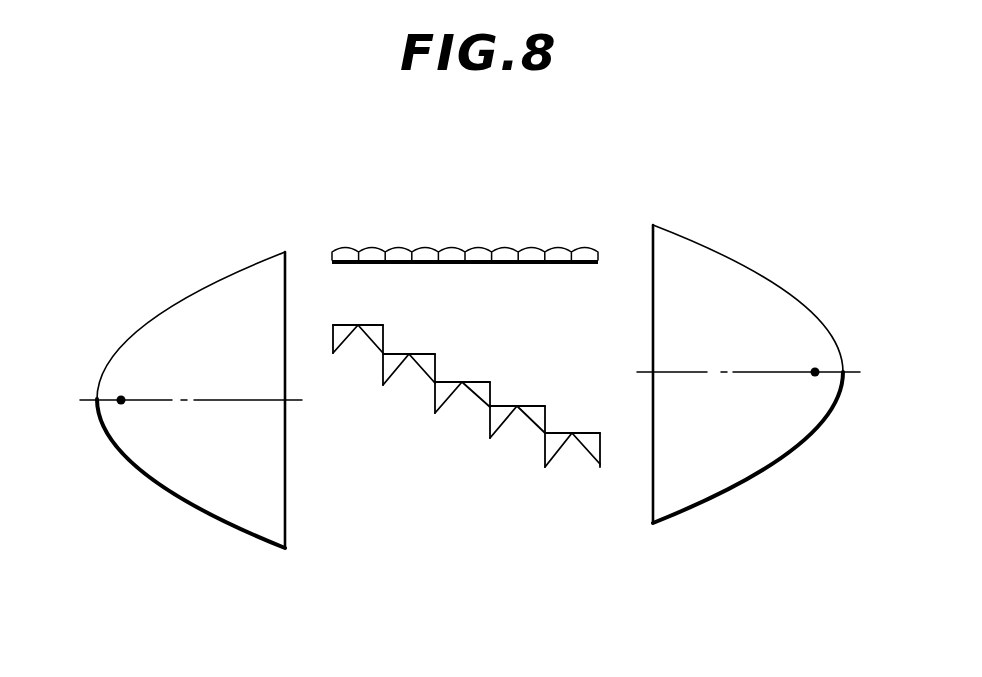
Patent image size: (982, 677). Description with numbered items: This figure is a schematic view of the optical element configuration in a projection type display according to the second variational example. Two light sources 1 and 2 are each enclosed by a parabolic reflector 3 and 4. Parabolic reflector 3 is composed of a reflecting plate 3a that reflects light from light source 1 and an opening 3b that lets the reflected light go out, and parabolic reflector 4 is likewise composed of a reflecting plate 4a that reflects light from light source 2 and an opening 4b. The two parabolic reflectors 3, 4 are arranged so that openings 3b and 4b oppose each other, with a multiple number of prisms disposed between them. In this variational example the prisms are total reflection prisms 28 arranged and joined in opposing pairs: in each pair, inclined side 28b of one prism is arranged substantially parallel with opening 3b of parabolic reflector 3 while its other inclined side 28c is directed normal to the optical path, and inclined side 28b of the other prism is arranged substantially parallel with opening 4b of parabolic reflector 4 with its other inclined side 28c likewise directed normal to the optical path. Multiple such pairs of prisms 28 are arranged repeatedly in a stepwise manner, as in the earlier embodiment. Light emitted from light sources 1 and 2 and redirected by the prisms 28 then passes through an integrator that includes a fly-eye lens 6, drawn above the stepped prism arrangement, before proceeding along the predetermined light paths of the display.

The light source 1 is at (116, 405).
The light source 2 is at (820, 367).
The parabolic reflector 3 is at (245, 420).
The reflecting plate 3a is at (150, 318).
The opening 3b is at (285, 503).
The parabolic reflector 4 is at (709, 411).
The reflecting plate 4a is at (787, 457).
The opening 4b is at (650, 482).
The fly-eye lens 6 is at (578, 246).
The total reflection prism 28 is at (466, 336).
The inclined side 28b is at (332, 353).
The inclined side 28c is at (345, 323).